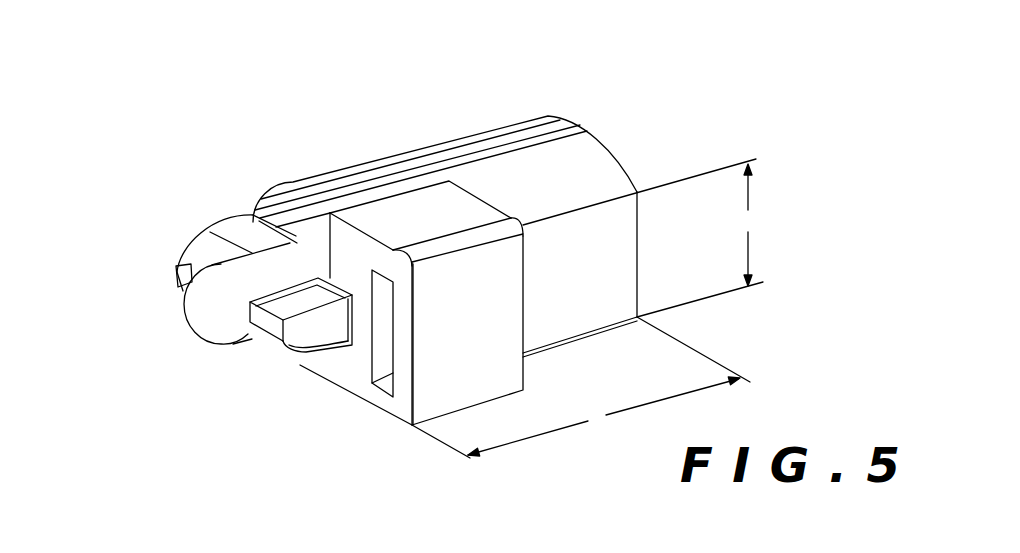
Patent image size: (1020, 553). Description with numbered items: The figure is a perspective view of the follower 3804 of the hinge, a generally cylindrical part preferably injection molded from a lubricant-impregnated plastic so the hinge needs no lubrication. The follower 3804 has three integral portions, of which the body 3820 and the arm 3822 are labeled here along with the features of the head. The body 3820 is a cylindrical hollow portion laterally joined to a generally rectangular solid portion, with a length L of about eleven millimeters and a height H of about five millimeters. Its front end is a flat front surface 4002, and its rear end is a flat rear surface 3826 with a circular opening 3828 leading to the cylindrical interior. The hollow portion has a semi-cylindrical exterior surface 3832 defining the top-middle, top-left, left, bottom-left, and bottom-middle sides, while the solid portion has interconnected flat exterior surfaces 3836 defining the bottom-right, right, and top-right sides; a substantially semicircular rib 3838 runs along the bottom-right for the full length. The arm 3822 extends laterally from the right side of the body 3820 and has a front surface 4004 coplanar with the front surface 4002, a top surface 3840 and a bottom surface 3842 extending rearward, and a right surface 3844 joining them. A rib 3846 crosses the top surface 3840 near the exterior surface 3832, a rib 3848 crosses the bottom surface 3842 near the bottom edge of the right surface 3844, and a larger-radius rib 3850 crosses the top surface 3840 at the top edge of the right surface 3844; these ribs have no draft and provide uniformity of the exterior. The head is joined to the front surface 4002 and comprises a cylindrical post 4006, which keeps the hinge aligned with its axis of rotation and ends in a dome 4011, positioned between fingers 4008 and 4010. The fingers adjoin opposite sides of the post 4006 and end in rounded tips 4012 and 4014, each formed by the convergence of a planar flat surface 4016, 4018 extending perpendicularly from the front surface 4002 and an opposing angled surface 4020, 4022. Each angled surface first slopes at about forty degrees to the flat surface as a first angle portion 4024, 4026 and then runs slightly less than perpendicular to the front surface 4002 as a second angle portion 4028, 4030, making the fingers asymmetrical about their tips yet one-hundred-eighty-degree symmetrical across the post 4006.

The follower 3804 is at (800, 75).
The body 3820 is at (498, 55).
The arm 3822 is at (476, 418).
The rear surface 3826 is at (638, 270).
The circular opening 3828 is at (88, 160).
The semi-cylindrical exterior surface 3832 is at (404, 162).
The flat exterior surfaces 3836 is at (622, 188).
The rib 3838 is at (352, 393).
The top surface 3840 is at (470, 190).
The bottom surface 3842 is at (377, 407).
The right surface 3844 is at (500, 310).
The rib 3846 is at (443, 183).
The rib 3848 is at (402, 423).
The rib 3850 is at (500, 232).
The front surface 4002 is at (298, 215).
The front surface 4004 is at (403, 365).
The post 4006 is at (289, 257).
The finger 4008 is at (331, 372).
The finger 4010 is at (214, 175).
The dome 4011 is at (198, 303).
The tip 4012 is at (250, 318).
The tip 4014 is at (188, 273).
The flat surface 4016 is at (325, 290).
The flat surface 4018 is at (176, 285).
The angled surface 4020 is at (293, 350).
The angled surface 4022 is at (218, 233).
The first angle portion 4024 is at (276, 322).
The first angle portion 4026 is at (200, 253).
The second angle portion 4028 is at (337, 347).
The second angle portion 4030 is at (240, 236).